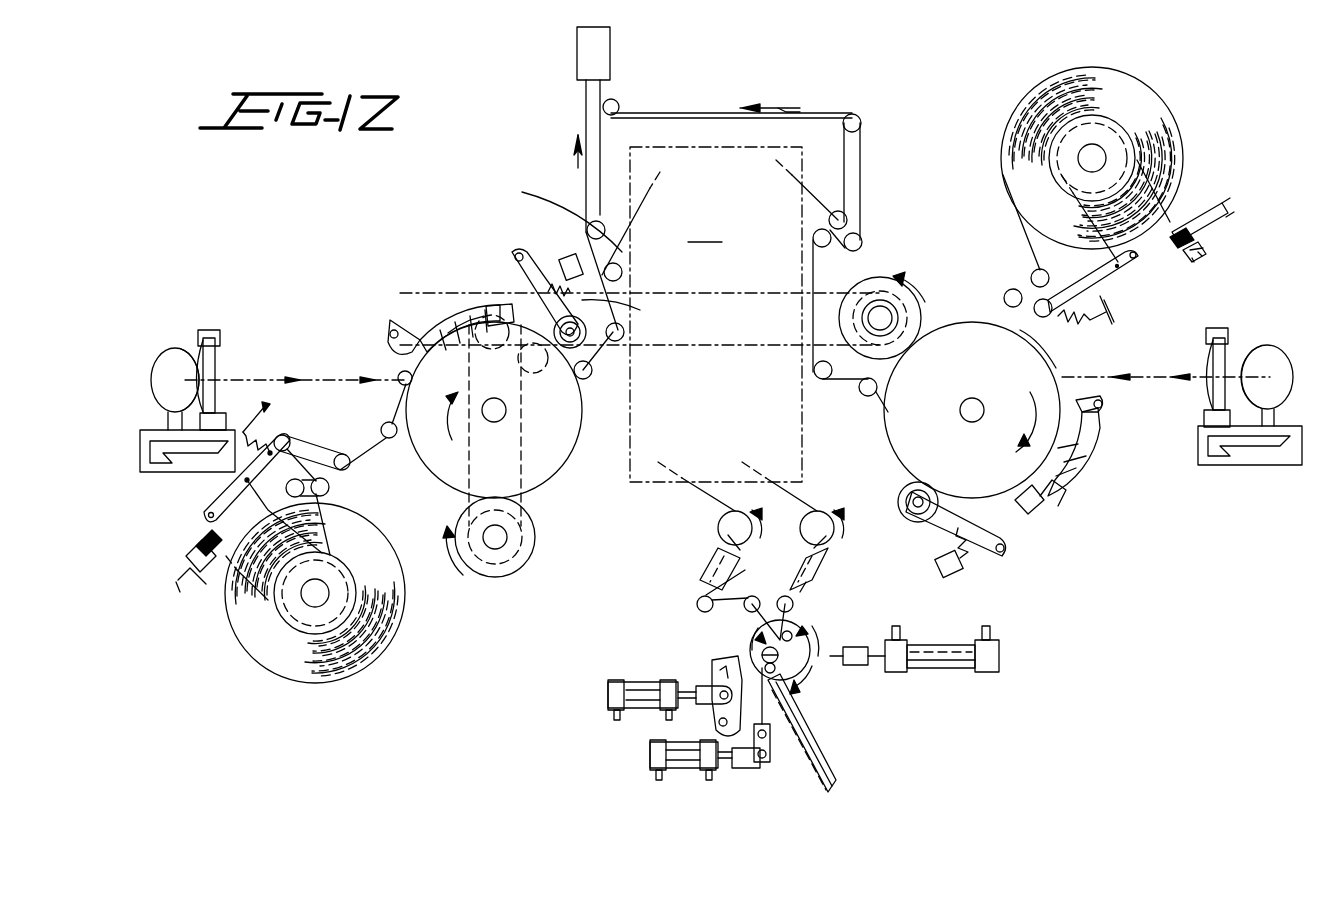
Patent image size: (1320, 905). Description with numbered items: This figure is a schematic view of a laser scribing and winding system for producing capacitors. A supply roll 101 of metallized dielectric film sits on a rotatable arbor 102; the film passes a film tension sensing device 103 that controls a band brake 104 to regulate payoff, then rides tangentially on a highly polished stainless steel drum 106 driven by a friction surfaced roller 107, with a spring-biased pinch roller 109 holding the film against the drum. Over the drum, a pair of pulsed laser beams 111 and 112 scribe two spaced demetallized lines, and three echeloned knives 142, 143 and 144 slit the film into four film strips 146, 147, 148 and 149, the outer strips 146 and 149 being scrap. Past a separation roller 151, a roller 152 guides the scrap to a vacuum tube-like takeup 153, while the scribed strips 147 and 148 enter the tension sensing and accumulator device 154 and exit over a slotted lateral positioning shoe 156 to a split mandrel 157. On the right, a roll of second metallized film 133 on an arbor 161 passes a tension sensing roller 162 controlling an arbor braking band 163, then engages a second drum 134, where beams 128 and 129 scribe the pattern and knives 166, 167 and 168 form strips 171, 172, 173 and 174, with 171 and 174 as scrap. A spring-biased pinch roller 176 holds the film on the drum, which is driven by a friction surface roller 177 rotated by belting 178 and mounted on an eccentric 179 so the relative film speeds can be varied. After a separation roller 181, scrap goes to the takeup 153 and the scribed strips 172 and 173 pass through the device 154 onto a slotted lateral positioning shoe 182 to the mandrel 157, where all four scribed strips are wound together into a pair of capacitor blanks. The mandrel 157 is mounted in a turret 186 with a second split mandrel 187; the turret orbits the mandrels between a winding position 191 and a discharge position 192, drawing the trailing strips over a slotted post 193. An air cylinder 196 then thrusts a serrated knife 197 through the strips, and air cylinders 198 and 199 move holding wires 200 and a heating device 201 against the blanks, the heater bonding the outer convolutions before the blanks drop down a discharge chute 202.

The supply roll 101 is at (329, 489).
The rotatable arbor 102 is at (330, 593).
The film tension sensing device 103 is at (283, 436).
The band brake 104 is at (260, 508).
The drum 106 is at (437, 486).
The friction surfaced roller 107 is at (503, 576).
The spring-biased pinch roller 109 is at (583, 310).
The pulsed laser beam 111 is at (338, 377).
The pulsed laser beam 112 is at (275, 345).
The beam 128 is at (1128, 377).
The reflected beam 129 is at (1172, 353).
The second metallized film 133 is at (1050, 332).
The second drum 134 is at (1006, 338).
The echeloned knife 142 is at (442, 326).
The echeloned knife 143 is at (466, 326).
The echeloned knife 144 is at (492, 322).
The film strip 146 is at (586, 120).
The film strip 147 is at (512, 218).
The film strip 148 is at (495, 211).
The film strip 149 is at (552, 127).
The separation roller 151 is at (622, 270).
The roller 152 is at (586, 233).
The vacuum tube-like takeup 153 is at (611, 52).
The tension sensing and accumulator device 154 is at (716, 314).
The slotted lateral positioning shoe 156 is at (716, 576).
The split mandrel 157 is at (792, 632).
The arbor 161 is at (1104, 150).
The tension sensing roller 162 is at (1014, 286).
The arbor braking band 163 is at (1180, 225).
The echeloned knife 166 is at (1074, 460).
The echeloned knife 167 is at (1062, 480).
The echeloned knife 168 is at (1046, 500).
The film strip 171 is at (884, 126).
The film strip 172 is at (835, 180).
The film strip 173 is at (802, 186).
The film strip 174 is at (905, 157).
The spring-biased pinch roller 176 is at (904, 516).
The friction surface roller 177 is at (872, 300).
The belting 178 is at (776, 292).
The eccentric 179 is at (878, 296).
The separation roller 181 is at (813, 238).
The slotted lateral positioning shoe 182 is at (820, 576).
The turret 186 is at (755, 640).
The second split mandrel 187 is at (800, 690).
The winding position 191 is at (802, 626).
The discharge position 192 is at (762, 654).
The slotted post 193 is at (776, 666).
The air cylinder 196 is at (930, 642).
The serrated knife 197 is at (836, 658).
The air cylinder 198 is at (648, 746).
The air cylinder 199 is at (612, 682).
The holding wires 200 is at (779, 729).
The heating device 201 is at (712, 660).
The discharge chute 202 is at (826, 748).